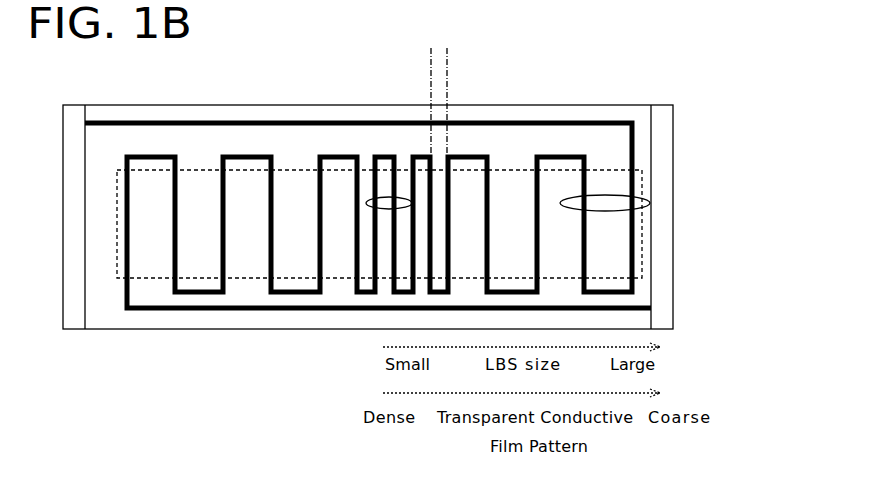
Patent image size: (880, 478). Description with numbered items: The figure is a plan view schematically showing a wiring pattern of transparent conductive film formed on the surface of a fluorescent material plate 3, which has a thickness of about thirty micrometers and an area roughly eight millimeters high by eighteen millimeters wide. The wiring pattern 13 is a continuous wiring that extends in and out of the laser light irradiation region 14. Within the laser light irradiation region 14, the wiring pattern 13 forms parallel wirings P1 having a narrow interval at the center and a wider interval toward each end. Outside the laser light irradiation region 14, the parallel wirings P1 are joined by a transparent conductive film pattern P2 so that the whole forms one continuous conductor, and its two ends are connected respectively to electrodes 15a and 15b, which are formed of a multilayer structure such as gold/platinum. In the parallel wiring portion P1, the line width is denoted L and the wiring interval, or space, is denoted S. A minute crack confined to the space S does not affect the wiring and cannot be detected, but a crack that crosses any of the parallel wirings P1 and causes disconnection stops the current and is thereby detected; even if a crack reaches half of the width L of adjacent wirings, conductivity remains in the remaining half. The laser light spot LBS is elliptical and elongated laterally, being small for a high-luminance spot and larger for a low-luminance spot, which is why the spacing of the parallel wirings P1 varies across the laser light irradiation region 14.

The fluorescent material plate 3 is at (175, 330).
The wiring pattern 13 is at (272, 200).
The laser light irradiation region 14 is at (512, 170).
The electrode 15a is at (74, 322).
The electrode 15b is at (667, 318).
The laser light spot LBS is at (386, 196).
The wiring interval (space) S is at (475, 57).
The wiring (line) width L is at (437, 90).
The parallel wirings P1 is at (356, 246).
The transparent conductive film pattern P2 is at (358, 298).